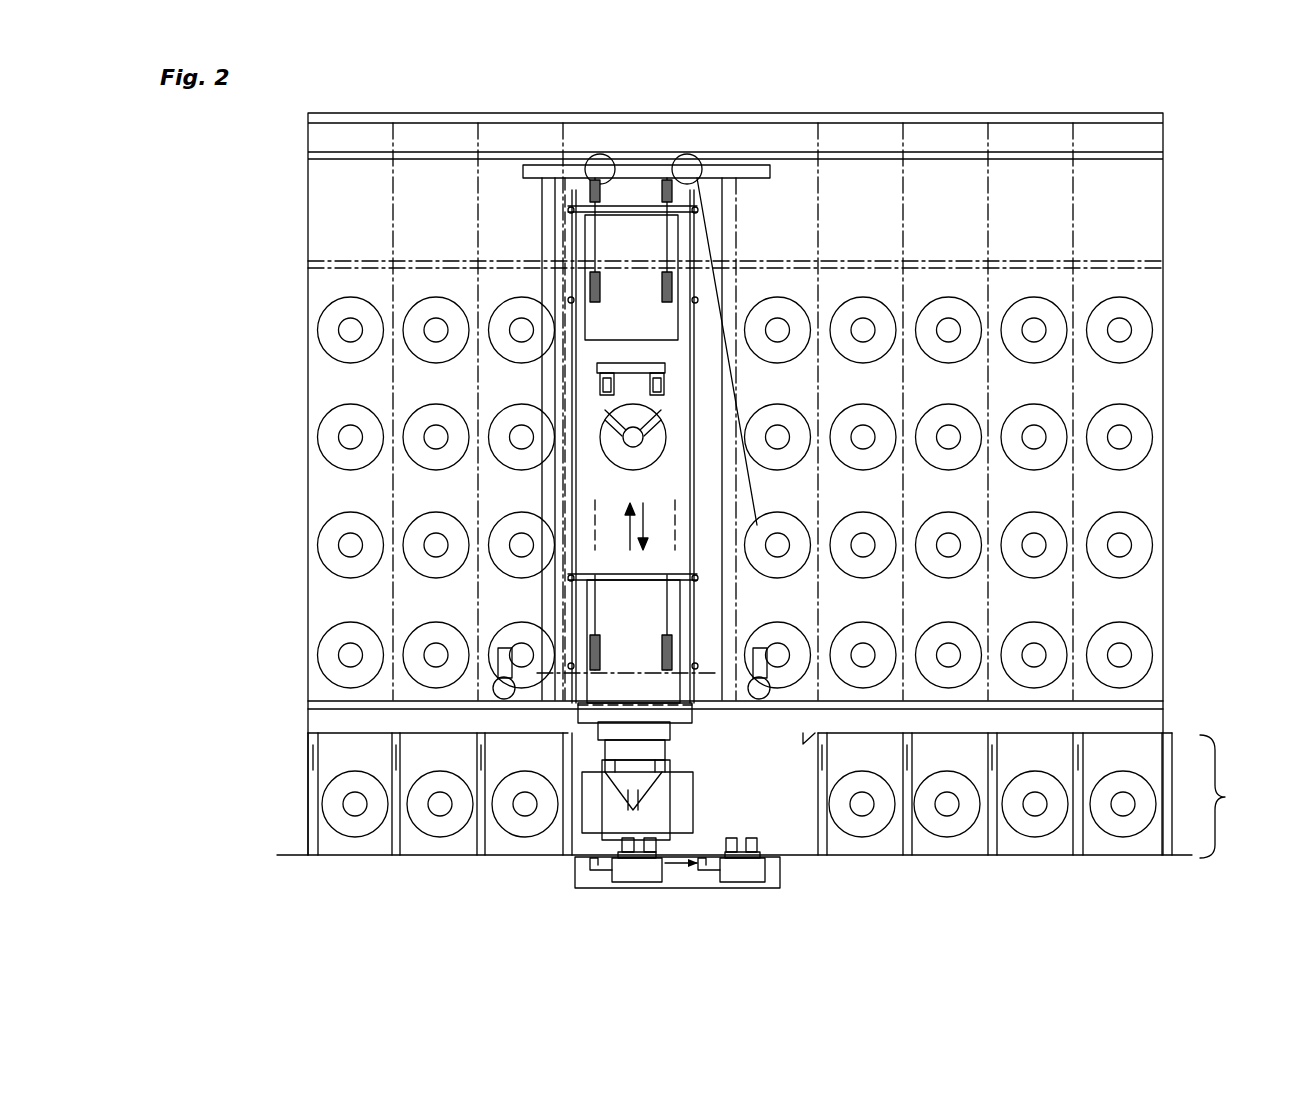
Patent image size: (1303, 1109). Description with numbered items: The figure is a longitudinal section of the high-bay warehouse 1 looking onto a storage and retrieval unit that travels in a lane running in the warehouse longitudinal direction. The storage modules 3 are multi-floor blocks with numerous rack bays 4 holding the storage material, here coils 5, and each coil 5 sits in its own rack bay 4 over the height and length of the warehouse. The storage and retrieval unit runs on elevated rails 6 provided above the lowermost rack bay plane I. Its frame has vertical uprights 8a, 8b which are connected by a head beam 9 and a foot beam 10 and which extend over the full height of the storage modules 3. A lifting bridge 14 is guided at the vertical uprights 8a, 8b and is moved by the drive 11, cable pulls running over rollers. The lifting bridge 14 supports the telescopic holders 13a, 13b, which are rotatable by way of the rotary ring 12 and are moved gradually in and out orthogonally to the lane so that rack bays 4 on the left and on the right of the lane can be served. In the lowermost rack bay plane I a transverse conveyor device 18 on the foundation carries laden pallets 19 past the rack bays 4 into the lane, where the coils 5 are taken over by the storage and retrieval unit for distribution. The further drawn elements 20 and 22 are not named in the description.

The high-bay warehouse 1 is at (1124, 100).
The storage module 3 is at (272, 262).
The rack bay 4 is at (1155, 292).
The coil 5 is at (1027, 328).
The elevated rails 6 is at (322, 713).
The vertical upright 8a is at (552, 500).
The vertical upright 8b is at (707, 315).
The head beam 9 is at (643, 170).
The foot beam 10 is at (512, 678).
The drive 11 is at (592, 240).
The rotary ring 12 is at (652, 365).
The telescopic holder 13a is at (600, 385).
The telescopic holder 13b is at (665, 385).
The lifting bridge 14 is at (577, 320).
The transverse conveyor device 18 is at (636, 895).
The pallet 19 is at (633, 872).
The transfer device 20 is at (650, 433).
The spool core 22 is at (1034, 328).
The lowermost rack bay plane I is at (1219, 796).